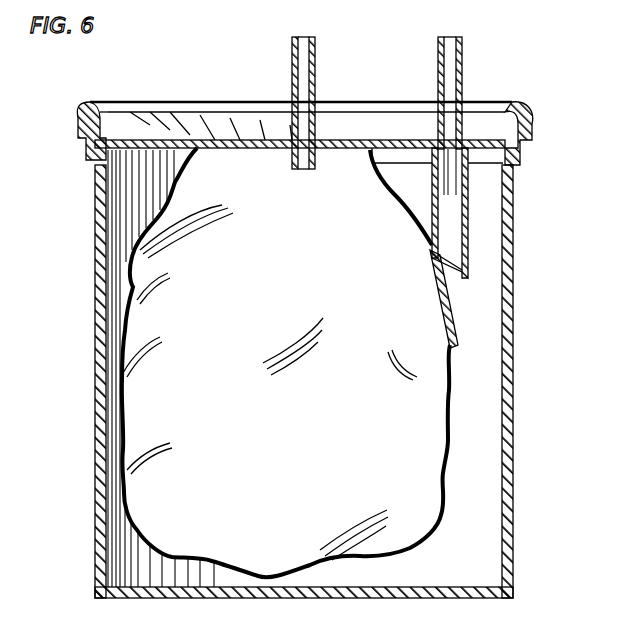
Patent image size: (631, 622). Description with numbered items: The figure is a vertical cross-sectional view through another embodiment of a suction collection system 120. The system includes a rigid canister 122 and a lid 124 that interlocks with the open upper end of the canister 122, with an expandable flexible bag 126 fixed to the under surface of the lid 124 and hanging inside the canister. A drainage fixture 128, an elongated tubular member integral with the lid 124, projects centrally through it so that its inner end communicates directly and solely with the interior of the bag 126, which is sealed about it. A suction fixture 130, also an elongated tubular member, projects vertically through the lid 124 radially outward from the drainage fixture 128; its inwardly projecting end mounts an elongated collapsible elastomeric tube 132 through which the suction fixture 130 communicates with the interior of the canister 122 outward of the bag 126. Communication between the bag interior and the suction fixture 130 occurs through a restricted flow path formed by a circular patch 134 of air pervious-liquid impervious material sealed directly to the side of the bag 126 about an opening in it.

The suction collection system 120 is at (520, 204).
The rigid canister 122 is at (345, 381).
The lid 124 is at (223, 100).
The expandable flexible bag 126 is at (118, 288).
The drainage fixture 128 is at (313, 65).
The suction fixture 130 is at (462, 65).
The collapsible elastomeric tube 132 is at (470, 243).
The patch 134 is at (460, 305).